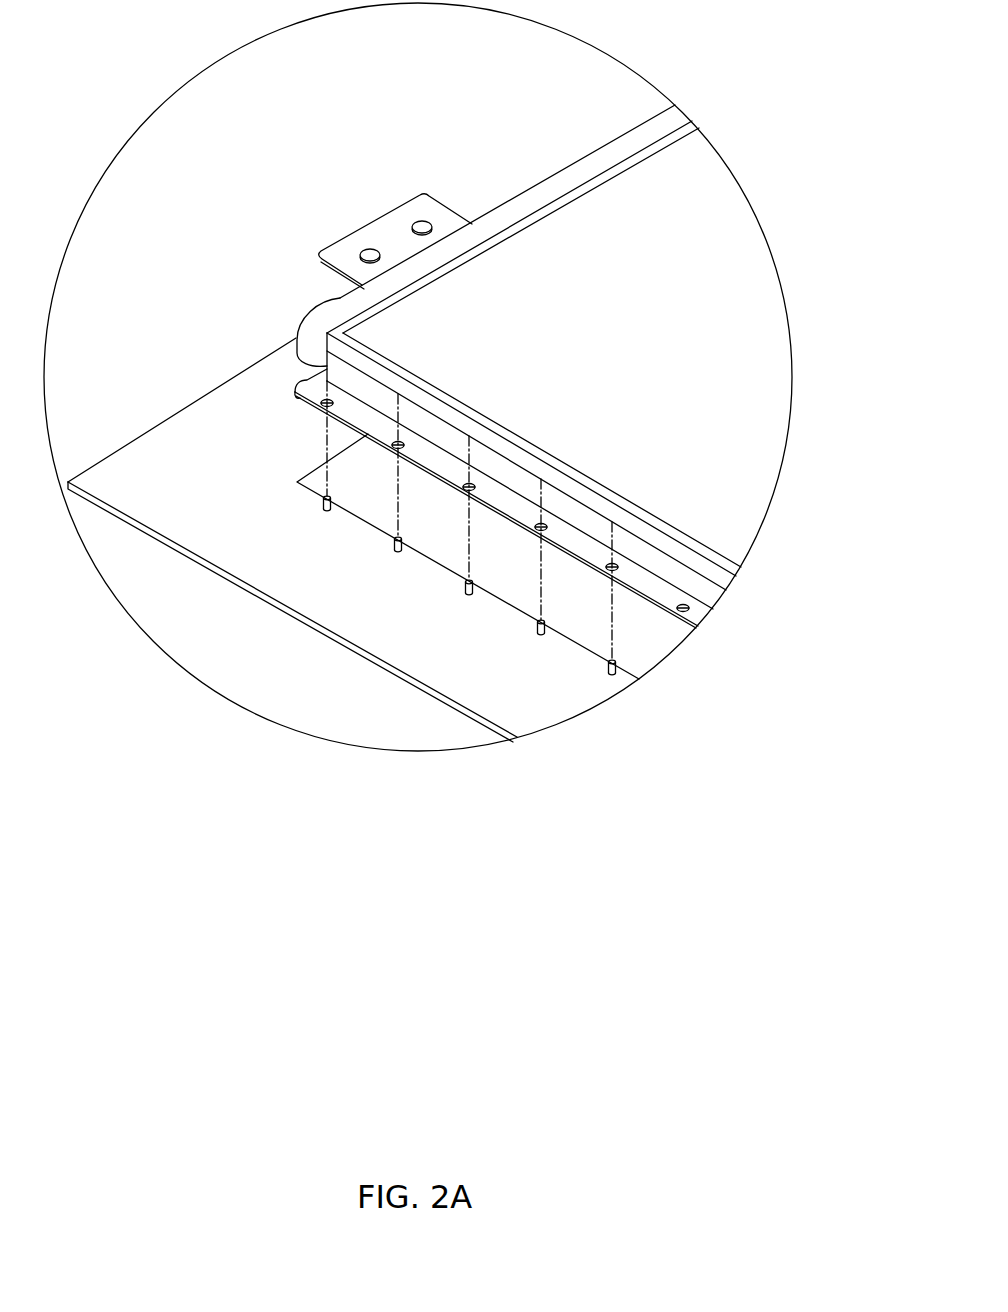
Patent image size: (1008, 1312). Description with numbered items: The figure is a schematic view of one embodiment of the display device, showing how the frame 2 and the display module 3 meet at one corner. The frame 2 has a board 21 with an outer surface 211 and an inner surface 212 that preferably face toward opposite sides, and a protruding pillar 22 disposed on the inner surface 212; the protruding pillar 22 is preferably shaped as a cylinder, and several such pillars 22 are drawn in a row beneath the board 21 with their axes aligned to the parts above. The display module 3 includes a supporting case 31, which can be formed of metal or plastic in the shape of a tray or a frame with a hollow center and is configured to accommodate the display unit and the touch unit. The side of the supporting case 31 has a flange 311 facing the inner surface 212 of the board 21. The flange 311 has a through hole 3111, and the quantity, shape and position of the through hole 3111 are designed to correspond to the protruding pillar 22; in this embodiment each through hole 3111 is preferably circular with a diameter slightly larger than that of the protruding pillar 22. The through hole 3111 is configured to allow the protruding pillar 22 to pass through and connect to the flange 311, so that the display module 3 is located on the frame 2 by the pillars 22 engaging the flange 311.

The frame 2 is at (335, 613).
The board 21 is at (335, 569).
The outer surface 211 is at (245, 590).
The inner surface 212 is at (198, 517).
The protruding pillar 22 is at (402, 545).
The display module 3 is at (447, 366).
The supporting case 31 is at (324, 330).
The flange 311 is at (300, 388).
The through hole 3111 is at (327, 400).